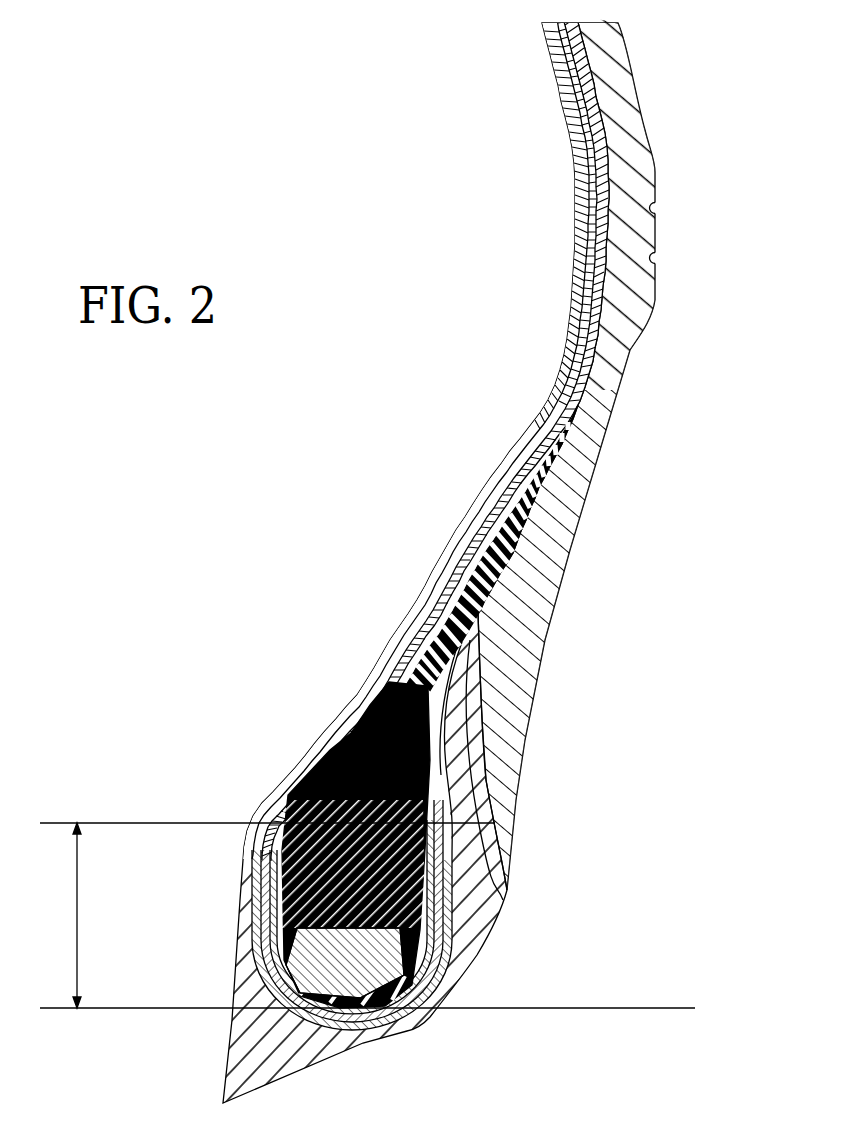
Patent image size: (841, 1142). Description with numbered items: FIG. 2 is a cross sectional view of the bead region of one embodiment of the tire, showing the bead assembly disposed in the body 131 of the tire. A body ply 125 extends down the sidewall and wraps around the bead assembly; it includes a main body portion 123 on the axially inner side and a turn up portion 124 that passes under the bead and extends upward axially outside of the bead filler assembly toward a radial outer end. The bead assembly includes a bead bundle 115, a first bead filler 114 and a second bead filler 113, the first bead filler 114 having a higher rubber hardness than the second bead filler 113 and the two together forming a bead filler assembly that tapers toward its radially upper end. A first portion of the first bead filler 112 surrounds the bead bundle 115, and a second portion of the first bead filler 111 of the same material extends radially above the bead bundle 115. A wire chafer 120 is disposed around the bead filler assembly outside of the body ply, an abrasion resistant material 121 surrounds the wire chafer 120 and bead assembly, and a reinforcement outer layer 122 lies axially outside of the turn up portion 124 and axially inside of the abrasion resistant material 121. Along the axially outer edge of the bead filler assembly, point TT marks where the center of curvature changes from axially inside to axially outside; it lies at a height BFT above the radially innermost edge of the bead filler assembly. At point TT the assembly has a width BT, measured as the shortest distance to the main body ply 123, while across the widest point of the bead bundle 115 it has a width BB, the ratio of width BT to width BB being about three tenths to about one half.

The second portion of the first bead filler 111 is at (365, 722).
The first portion of the first bead filler 112 is at (283, 925).
The second bead filler 113 is at (413, 628).
The first bead filler 114 is at (253, 878).
The bead bundle 115 is at (395, 927).
The wire chafer 120 is at (363, 1043).
The abrasion resistant material 121 is at (453, 777).
The reinforcement outer layer 122 is at (453, 732).
The main body portion 123 is at (368, 662).
The turn up portion 124 is at (453, 705).
The body ply 125 is at (565, 382).
The body 131 is at (613, 407).
The width BT is at (325, 793).
The width BB is at (395, 970).
The point TT is at (420, 823).
The height BFT is at (77, 915).